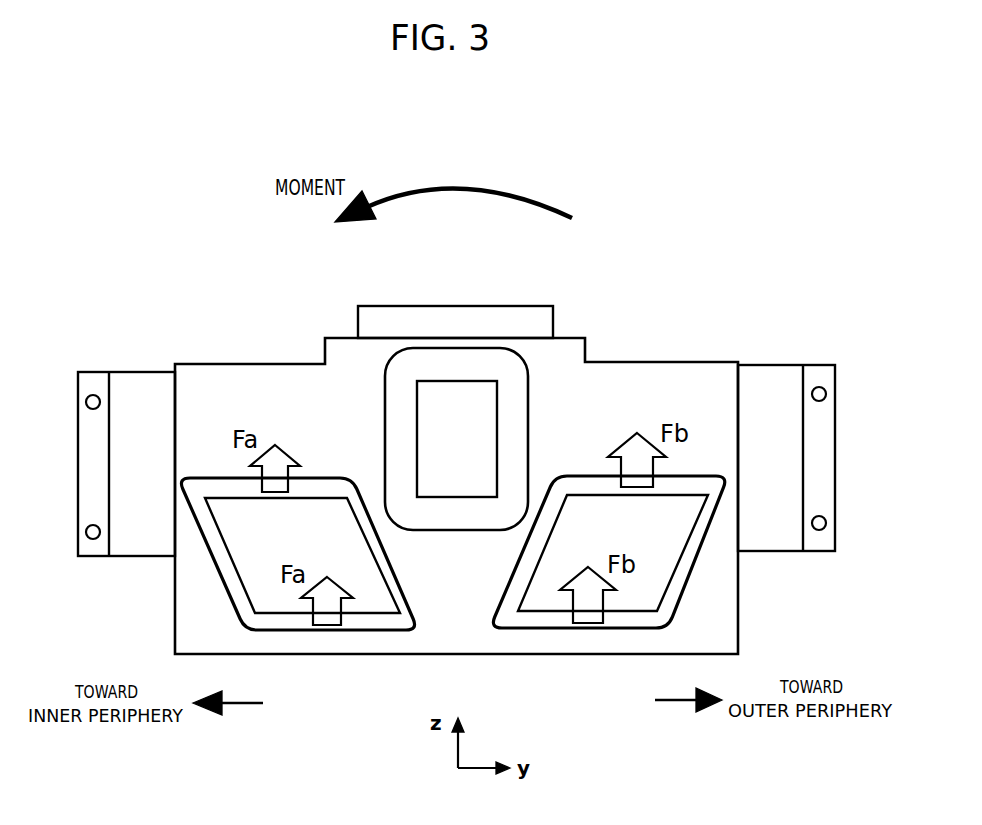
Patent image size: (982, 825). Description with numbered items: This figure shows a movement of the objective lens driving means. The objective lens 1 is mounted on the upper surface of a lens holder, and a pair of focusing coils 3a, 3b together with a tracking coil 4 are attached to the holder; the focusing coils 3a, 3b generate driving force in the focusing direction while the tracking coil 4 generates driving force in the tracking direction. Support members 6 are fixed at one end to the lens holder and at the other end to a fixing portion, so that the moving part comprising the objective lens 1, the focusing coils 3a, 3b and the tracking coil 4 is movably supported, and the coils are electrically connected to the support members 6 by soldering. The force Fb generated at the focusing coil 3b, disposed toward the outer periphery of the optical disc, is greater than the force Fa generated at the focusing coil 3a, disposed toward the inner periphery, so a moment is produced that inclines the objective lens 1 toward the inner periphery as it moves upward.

The objective lens 1 is at (491, 324).
The focusing coil 3a is at (232, 585).
The focusing coil 3b is at (685, 580).
The tracking coil 4 is at (508, 418).
The support member 6 is at (87, 397).